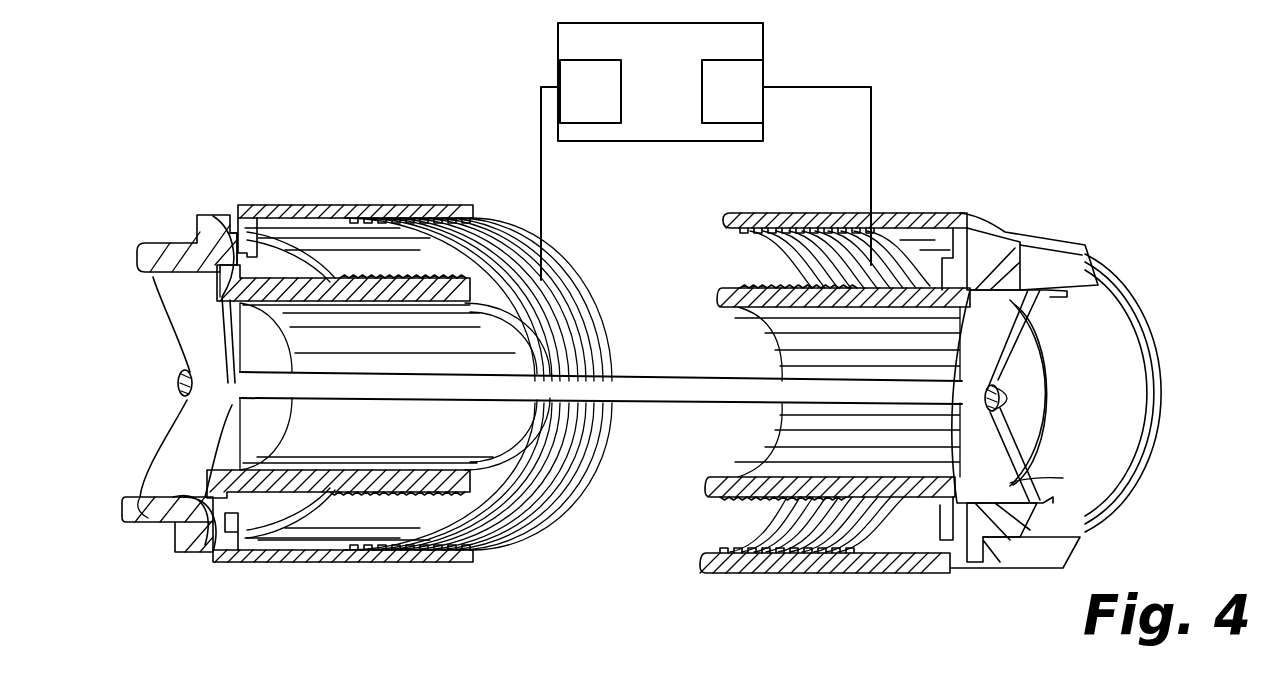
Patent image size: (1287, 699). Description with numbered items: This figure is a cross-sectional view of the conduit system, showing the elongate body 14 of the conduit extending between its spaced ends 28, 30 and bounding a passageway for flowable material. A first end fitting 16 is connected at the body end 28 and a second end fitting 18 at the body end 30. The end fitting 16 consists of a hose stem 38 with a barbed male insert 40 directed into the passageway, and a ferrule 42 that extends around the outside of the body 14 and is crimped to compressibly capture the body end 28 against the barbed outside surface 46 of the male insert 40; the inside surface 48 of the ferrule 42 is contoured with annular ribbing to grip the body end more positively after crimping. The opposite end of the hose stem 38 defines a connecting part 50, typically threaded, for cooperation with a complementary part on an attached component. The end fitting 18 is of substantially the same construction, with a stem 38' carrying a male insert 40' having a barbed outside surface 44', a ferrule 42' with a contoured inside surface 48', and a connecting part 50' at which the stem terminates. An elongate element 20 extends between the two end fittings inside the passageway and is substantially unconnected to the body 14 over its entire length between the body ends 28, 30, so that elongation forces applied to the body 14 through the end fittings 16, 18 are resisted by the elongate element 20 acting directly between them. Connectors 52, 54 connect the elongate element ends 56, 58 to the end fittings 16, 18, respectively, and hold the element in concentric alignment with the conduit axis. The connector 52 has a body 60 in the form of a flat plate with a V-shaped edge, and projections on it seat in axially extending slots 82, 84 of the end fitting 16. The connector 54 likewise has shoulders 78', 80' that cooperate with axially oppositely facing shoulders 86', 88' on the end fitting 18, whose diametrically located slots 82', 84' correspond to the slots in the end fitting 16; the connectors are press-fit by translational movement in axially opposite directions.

The elongate body 14 is at (648, 100).
The body end 28 is at (717, 118).
The body end 30 is at (576, 118).
The first end fitting 16 is at (993, 211).
The second end fitting 18 is at (388, 200).
The elongate element 20 is at (660, 405).
The hose stem 38 is at (837, 491).
The stem 38' is at (343, 332).
The barbed male insert 40 is at (797, 453).
The barbed male insert 40' is at (395, 380).
The ferrule 42 is at (833, 439).
The ferrule 42' is at (337, 333).
The barbed outside surface 44' is at (418, 334).
The barbed outside surface 46 is at (815, 288).
The inside surface 48 is at (794, 369).
The contoured inside surface 48' is at (338, 381).
The connecting part 50 is at (1128, 393).
The connecting part 50' is at (179, 339).
The connector 52 is at (1003, 482).
The connector 54 is at (203, 448).
The elongate element end 56 is at (997, 390).
The elongate element end 58 is at (178, 387).
The connector body 60 is at (968, 463).
The shoulder 78' is at (237, 317).
The shoulder 80' is at (174, 584).
The slot 82 is at (1041, 362).
The slot 82' is at (151, 249).
The slot 84 is at (1097, 497).
The slot 84' is at (92, 466).
The shoulder 86' is at (127, 295).
The shoulder 88' is at (164, 574).